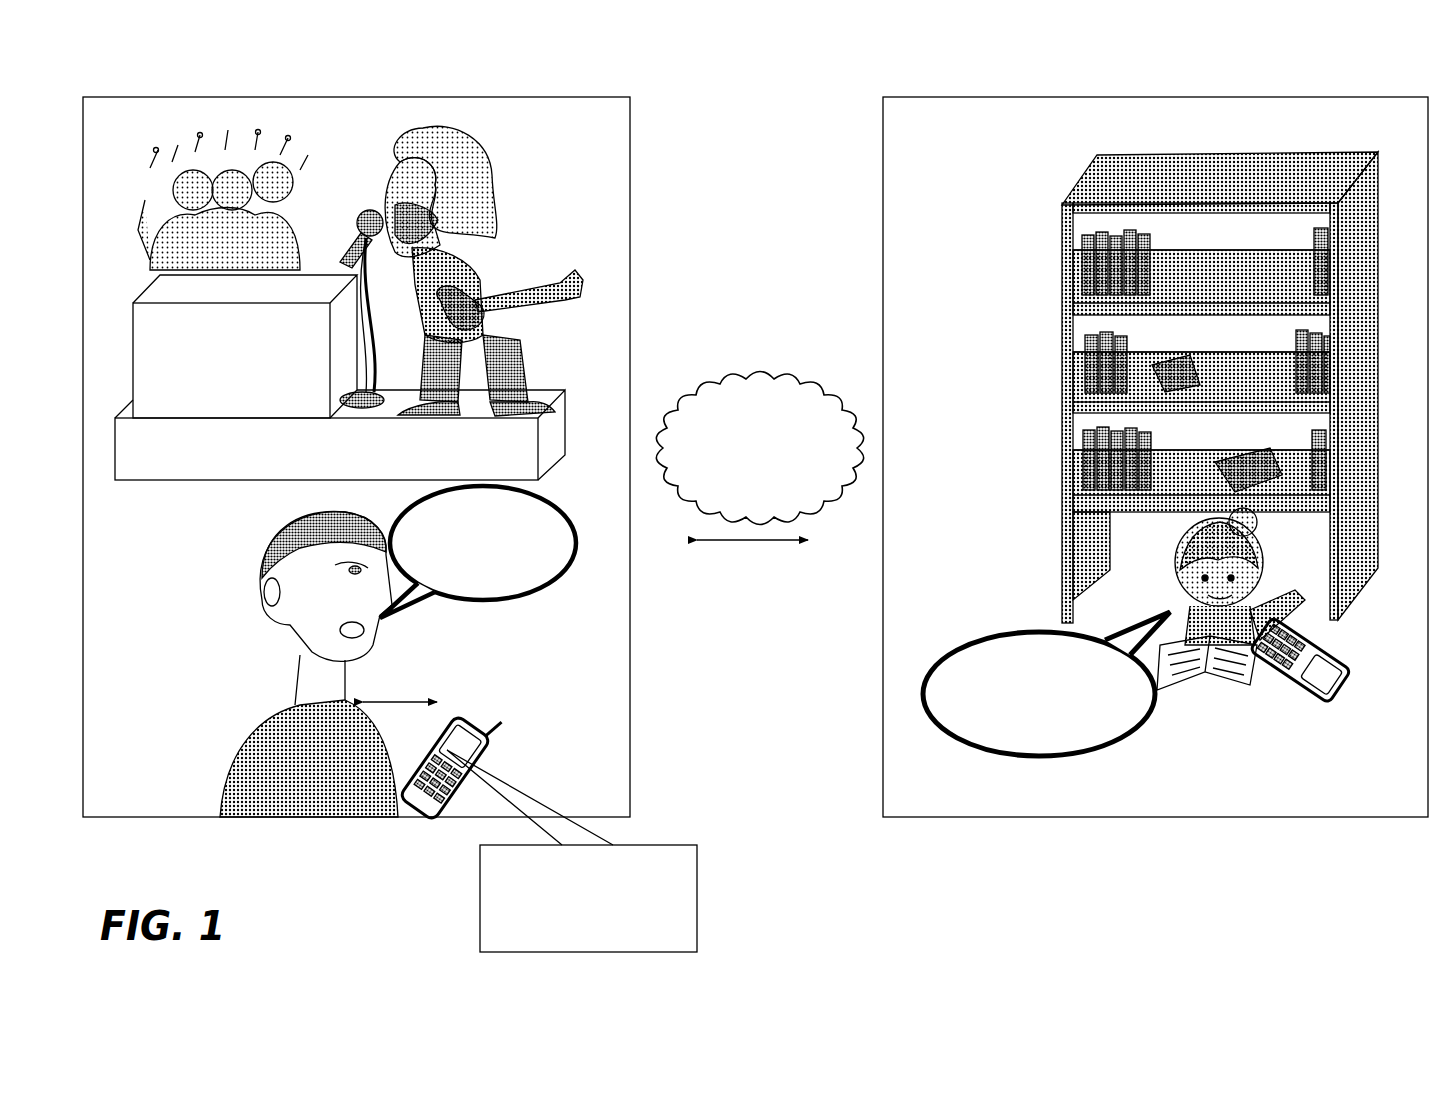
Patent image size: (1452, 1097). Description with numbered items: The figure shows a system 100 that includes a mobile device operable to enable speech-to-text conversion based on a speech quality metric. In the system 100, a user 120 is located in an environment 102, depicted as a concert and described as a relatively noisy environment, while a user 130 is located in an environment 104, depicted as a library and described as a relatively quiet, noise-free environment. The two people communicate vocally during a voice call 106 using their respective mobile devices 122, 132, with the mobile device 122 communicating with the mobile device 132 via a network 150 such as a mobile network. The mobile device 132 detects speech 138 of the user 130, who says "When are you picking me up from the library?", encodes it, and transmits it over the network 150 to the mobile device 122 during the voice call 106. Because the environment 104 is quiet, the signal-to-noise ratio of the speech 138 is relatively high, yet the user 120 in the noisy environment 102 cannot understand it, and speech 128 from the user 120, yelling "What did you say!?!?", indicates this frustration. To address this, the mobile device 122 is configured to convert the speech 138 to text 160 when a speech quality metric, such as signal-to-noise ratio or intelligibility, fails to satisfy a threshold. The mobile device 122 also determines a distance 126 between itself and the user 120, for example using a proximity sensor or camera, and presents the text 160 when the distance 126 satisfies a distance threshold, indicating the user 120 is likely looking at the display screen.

The system 100 is at (1130, 875).
The environment 102 is at (546, 97).
The environment 104 is at (1278, 97).
The voice call 106 is at (752, 540).
The user 120 is at (293, 673).
The mobile device 122 is at (487, 737).
The distance 126 is at (413, 702).
The speech 128 is at (570, 607).
The user 130 is at (1182, 588).
The mobile device 132 is at (1305, 690).
The speech 138 is at (1023, 782).
The network 150 is at (797, 380).
The text 160 is at (698, 897).